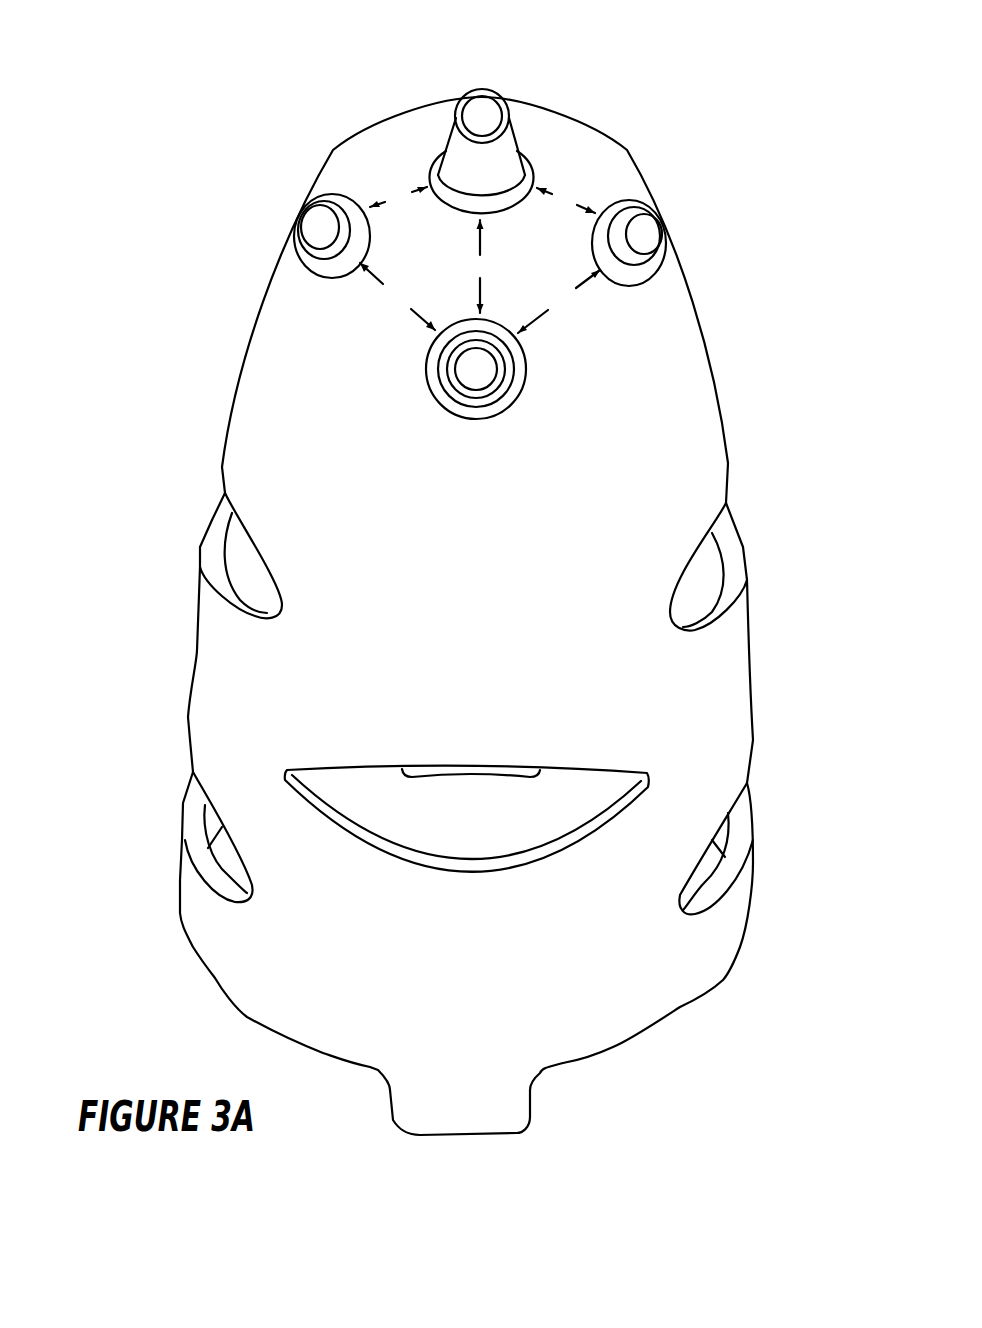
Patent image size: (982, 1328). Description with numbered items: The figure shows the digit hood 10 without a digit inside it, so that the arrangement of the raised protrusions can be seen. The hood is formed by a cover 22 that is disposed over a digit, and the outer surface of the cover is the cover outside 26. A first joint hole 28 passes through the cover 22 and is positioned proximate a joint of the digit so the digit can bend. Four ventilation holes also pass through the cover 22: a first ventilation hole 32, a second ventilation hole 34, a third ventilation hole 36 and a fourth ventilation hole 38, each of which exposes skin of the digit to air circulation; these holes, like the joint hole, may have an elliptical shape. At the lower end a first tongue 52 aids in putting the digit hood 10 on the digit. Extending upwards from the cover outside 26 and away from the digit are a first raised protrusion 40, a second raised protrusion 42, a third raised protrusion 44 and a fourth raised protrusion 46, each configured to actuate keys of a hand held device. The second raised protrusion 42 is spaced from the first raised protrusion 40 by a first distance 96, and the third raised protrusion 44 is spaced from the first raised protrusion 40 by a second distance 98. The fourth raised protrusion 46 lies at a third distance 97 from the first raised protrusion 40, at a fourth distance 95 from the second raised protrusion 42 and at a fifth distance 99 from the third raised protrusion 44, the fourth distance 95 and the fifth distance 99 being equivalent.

The digit hood 10 is at (176, 111).
The cover 22 is at (690, 387).
The cover outside 26 is at (249, 348).
The first joint hole 28 is at (473, 880).
The first ventilation hole 32 is at (203, 522).
The second ventilation hole 34 is at (742, 524).
The third ventilation hole 36 is at (188, 797).
The fourth ventilation hole 38 is at (752, 804).
The first raised protrusion 40 is at (482, 88).
The second raised protrusion 42 is at (297, 220).
The third raised protrusion 44 is at (672, 222).
The fourth raised protrusion 46 is at (477, 400).
The first tongue 52 is at (485, 1118).
The fourth distance 95 is at (397, 296).
The first distance 96 is at (398, 194).
The third distance 97 is at (480, 266).
The second distance 98 is at (566, 201).
The fifth distance 99 is at (559, 301).